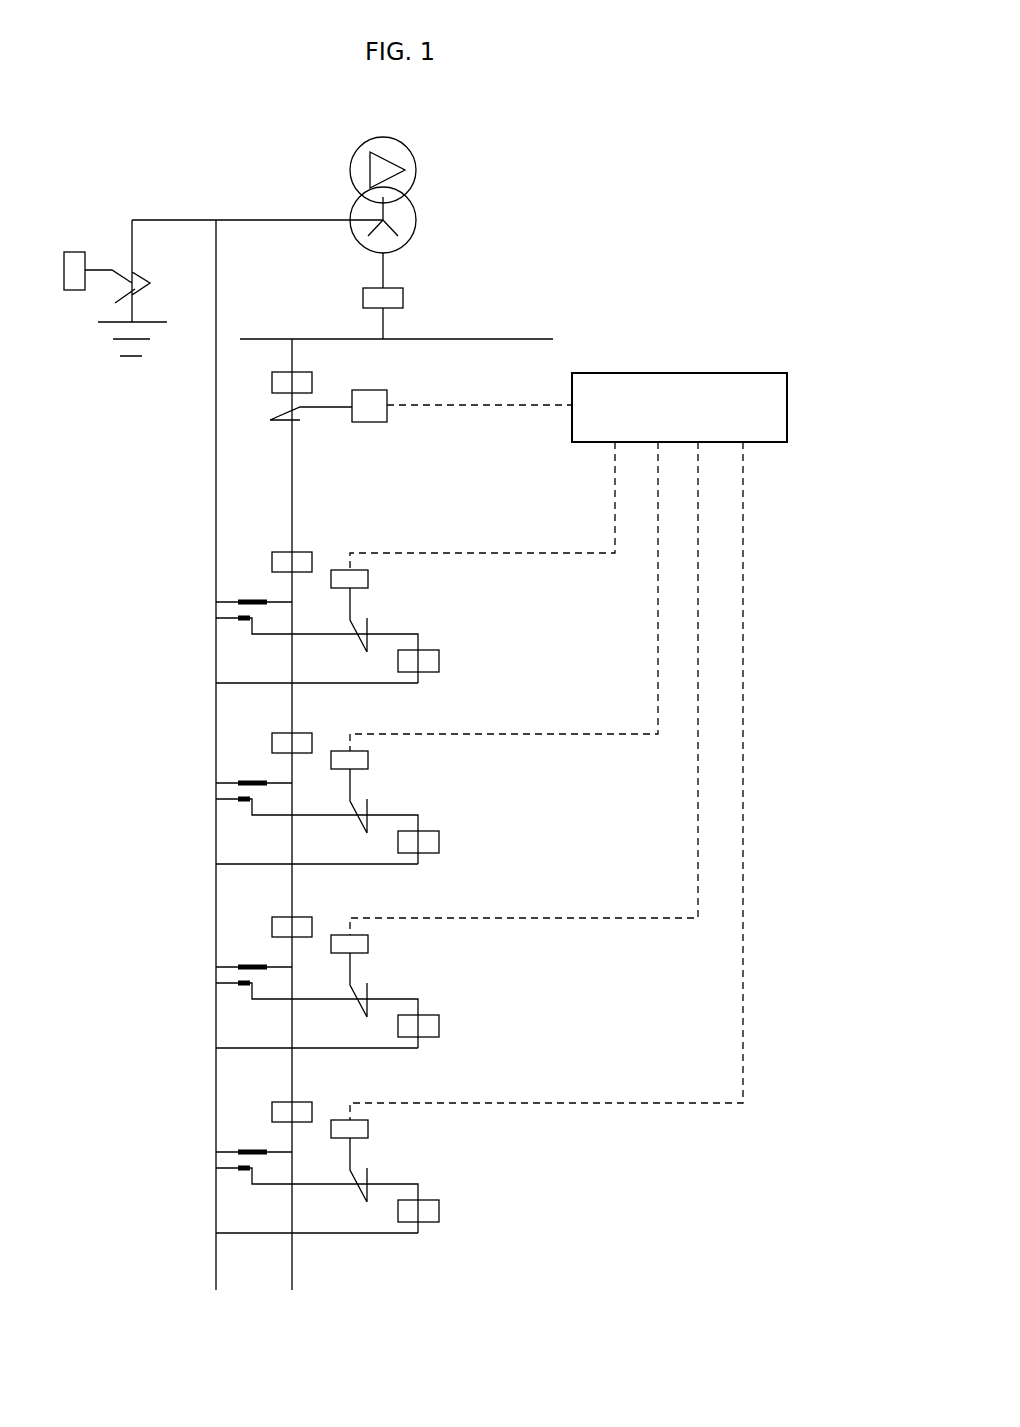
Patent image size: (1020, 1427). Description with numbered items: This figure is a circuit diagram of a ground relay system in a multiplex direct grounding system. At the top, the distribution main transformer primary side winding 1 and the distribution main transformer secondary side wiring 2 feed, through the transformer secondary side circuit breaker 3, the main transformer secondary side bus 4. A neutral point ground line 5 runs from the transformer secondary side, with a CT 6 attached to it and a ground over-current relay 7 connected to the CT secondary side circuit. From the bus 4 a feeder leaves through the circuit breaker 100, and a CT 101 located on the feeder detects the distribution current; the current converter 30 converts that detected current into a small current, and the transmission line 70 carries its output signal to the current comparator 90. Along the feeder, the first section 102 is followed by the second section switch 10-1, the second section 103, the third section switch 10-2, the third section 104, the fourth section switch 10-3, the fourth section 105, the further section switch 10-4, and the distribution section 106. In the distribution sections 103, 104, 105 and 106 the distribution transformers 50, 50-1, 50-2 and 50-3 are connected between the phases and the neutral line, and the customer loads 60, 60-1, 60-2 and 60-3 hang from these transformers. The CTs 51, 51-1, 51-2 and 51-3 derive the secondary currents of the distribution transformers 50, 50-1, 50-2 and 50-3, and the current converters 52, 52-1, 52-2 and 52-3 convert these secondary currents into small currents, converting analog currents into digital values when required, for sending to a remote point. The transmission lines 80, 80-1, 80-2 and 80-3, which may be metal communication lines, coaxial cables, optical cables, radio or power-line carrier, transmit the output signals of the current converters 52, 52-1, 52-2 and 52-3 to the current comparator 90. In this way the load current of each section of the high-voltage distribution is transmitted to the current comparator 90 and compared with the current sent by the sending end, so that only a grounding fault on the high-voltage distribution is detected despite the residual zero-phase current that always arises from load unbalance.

The distribution main transformer primary side winding 1 is at (416, 170).
The distribution main transformer secondary side wiring 2 is at (416, 220).
The transformer secondary side circuit breaker 3 is at (403, 298).
The main transformer secondary side bus 4 is at (505, 339).
The neutral point ground line 5 is at (270, 220).
The CT 6 is at (118, 267).
The ground over-current relay 7 is at (75, 252).
The current converter 30 is at (388, 393).
The distribution transformer 50 is at (252, 598).
The distribution transformer 50-1 is at (252, 779).
The distribution transformer 50-2 is at (252, 963).
The distribution transformer 50-3 is at (252, 1148).
The CT 51 is at (370, 622).
The CT 51-1 is at (370, 803).
The CT 51-2 is at (370, 987).
The CT 51-3 is at (370, 1172).
The current converter 52 is at (368, 578).
The current converter 52-1 is at (368, 759).
The current converter 52-2 is at (368, 943).
The current converter 52-3 is at (368, 1128).
The customer load 60 is at (440, 655).
The customer load 60-1 is at (440, 836).
The customer load 60-2 is at (440, 1020).
The customer load 60-3 is at (440, 1205).
The transmission line 70 is at (505, 407).
The transmission line 80 is at (538, 555).
The transmission line 80-1 is at (580, 736).
The transmission line 80-2 is at (612, 920).
The transmission line 80-3 is at (655, 1105).
The current comparator 90 is at (720, 373).
The circuit breaker 100 is at (298, 372).
The CT 101 is at (280, 422).
The first section 102 is at (293, 505).
The second section 103 is at (293, 668).
The third section 104 is at (293, 849).
The fourth section 105 is at (293, 1033).
The distribution section 106 is at (293, 1218).
The second section switch 10-1 is at (312, 562).
The third section switch 10-2 is at (312, 743).
The fourth section switch 10-3 is at (312, 927).
The section switch 10-4 is at (312, 1112).